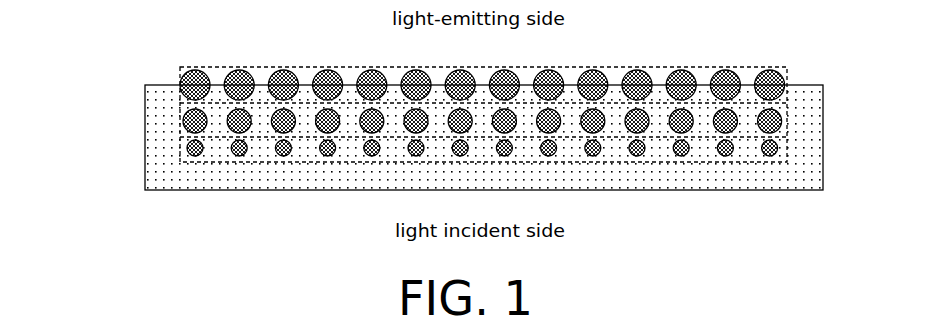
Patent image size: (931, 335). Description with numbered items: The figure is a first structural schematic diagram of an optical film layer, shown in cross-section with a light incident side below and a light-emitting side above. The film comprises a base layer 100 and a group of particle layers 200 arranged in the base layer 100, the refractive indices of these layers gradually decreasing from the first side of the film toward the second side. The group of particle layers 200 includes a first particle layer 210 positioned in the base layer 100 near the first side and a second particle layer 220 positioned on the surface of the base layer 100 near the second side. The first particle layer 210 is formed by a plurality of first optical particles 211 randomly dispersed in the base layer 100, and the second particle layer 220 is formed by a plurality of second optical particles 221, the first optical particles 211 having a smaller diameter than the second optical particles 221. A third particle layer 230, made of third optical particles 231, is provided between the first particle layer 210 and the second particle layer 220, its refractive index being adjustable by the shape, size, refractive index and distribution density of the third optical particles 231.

The base layer 100 is at (333, 173).
The group of particle layers 200 is at (73, 77).
The first particle layer 210 is at (480, 154).
The first optical particle 211 is at (779, 149).
The second particle layer 220 is at (480, 80).
The second optical particle 221 is at (785, 83).
The third particle layer 230 is at (480, 120).
The third optical particle 231 is at (783, 119).